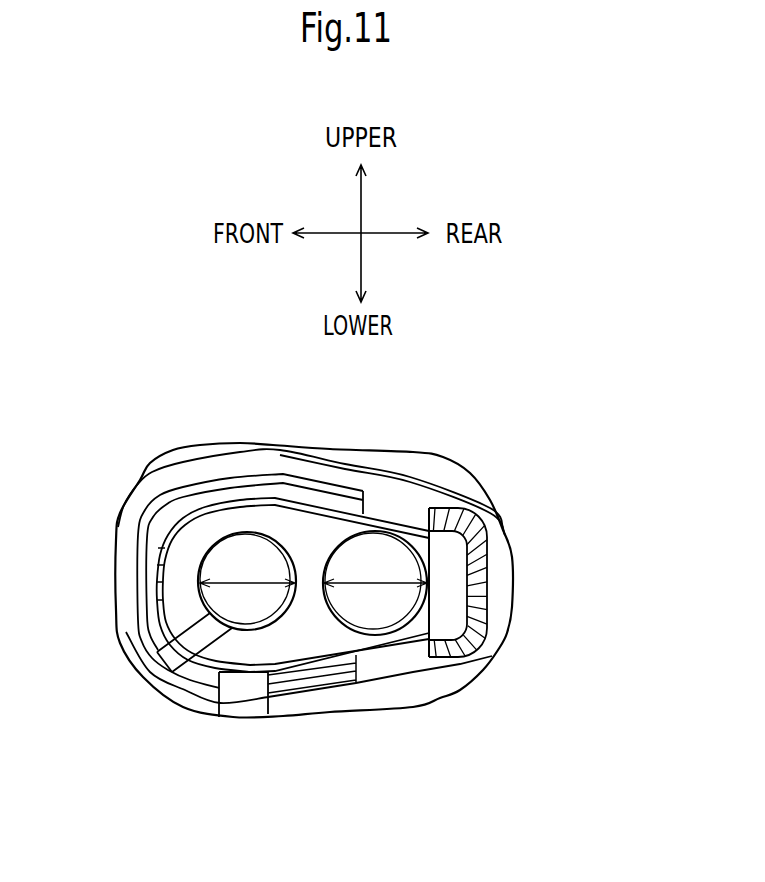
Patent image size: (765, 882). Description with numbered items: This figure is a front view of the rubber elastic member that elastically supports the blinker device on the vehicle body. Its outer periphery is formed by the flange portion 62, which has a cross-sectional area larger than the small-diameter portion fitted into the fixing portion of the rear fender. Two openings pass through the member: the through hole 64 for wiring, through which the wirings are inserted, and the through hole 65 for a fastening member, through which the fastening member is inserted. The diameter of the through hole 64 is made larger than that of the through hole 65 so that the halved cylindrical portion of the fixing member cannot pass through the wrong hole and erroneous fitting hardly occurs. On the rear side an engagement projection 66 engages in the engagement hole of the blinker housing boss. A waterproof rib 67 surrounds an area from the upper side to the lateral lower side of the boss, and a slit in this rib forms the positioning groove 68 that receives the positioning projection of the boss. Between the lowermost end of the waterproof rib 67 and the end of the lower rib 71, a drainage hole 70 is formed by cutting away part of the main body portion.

The flange portion 62 is at (448, 472).
The through hole for wiring 64 is at (380, 548).
The through hole for a fastening member 65 is at (250, 548).
The engagement projection 66 is at (448, 588).
The waterproof rib 67 is at (158, 532).
The positioning groove 68 is at (178, 659).
The drainage hole 70 is at (249, 697).
The lower rib 71 is at (312, 673).